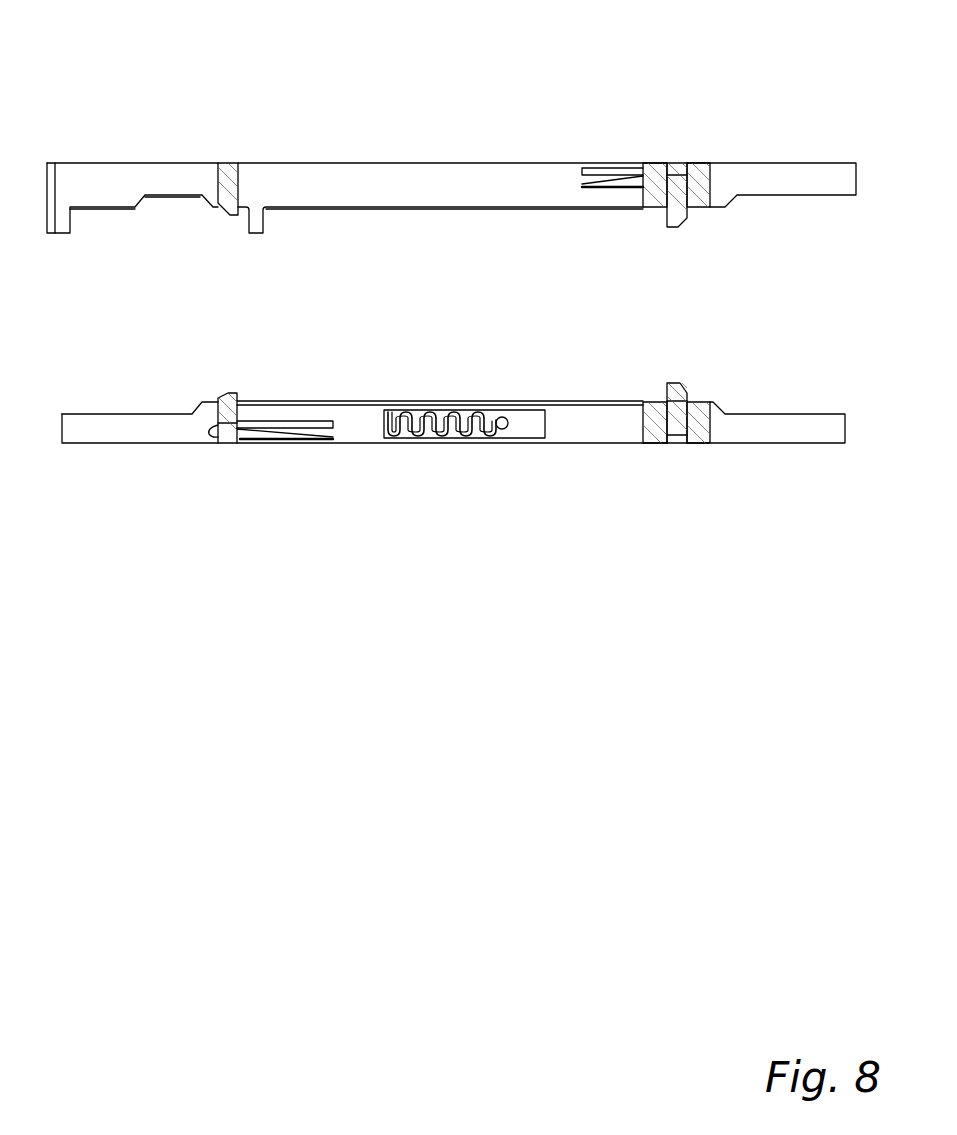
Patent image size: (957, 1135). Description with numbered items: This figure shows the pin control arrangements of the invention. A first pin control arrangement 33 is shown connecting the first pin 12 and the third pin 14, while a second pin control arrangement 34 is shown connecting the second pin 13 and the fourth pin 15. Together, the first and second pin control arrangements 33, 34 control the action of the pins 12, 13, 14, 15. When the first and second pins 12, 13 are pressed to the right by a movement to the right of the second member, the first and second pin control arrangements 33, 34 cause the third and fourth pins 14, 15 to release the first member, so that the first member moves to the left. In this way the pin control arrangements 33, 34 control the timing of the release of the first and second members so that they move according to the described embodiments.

The first pin 12 is at (680, 187).
The second pin 13 is at (677, 420).
The third pin 14 is at (232, 183).
The fourth pin 15 is at (230, 422).
The first pin control arrangement 33 is at (426, 183).
The second pin control arrangement 34 is at (592, 420).